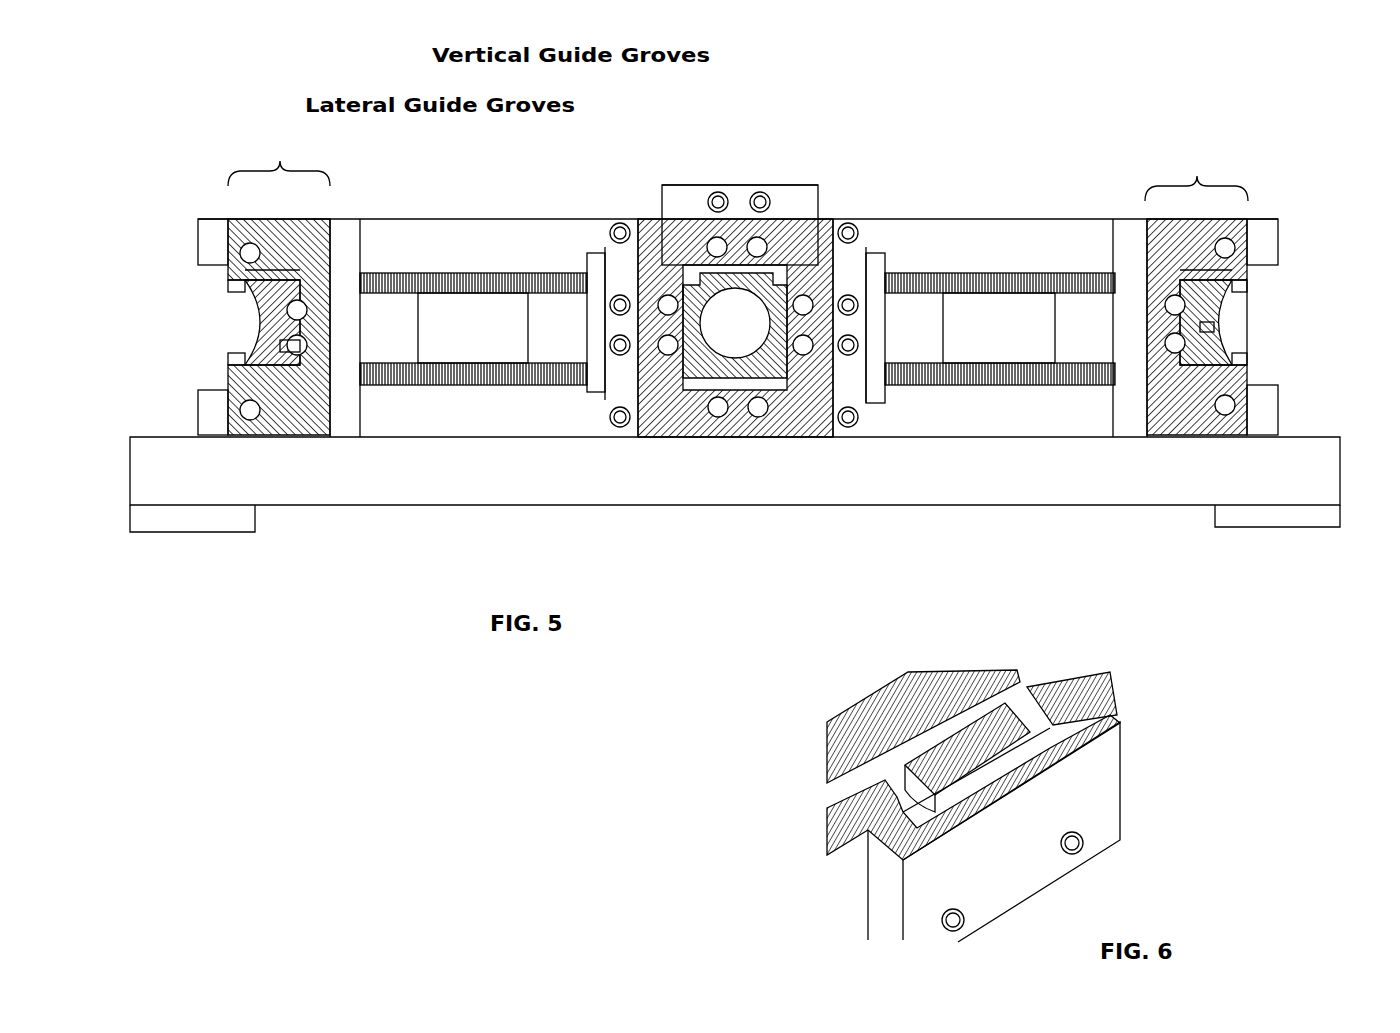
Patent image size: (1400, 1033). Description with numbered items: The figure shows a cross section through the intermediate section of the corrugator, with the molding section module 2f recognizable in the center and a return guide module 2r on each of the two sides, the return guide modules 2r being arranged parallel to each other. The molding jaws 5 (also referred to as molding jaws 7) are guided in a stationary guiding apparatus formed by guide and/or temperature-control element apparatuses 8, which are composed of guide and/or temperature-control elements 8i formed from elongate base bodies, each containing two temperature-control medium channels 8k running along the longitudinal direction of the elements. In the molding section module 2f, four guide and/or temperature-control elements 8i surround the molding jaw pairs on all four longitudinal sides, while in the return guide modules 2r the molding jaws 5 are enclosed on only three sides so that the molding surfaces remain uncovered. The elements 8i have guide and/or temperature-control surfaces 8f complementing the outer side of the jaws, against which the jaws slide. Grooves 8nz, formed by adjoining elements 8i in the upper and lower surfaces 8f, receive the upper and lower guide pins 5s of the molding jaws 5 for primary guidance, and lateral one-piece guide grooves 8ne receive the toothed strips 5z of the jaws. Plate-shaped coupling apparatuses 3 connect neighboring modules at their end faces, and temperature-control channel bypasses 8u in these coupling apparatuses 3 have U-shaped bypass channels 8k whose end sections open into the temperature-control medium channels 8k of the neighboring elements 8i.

In FIG. 5, the return guide module 2r is at (738, 169).
In FIG. 5, the molding section module 2f is at (743, 170).
In FIG. 6, the coupling apparatus 3 is at (1124, 815).
In FIG. 5, the molding jaw 5 is at (273, 320).
In FIG. 5, the guide pin 5s is at (242, 258).
In FIG. 5, the toothed strip 5z is at (257, 293).
In FIG. 5, the molding jaw 7 is at (235, 437).
In FIG. 5, the guide and/or temperature-control element apparatus 8 is at (277, 212).
In FIG. 5, the temperature-control medium channel 8k is at (258, 406).
In FIG. 6, the temperature-control medium channel 8k is at (1020, 685).
In FIG. 5, the guide and/or temperature-control element 8i is at (290, 440).
In FIG. 5, the lateral guide groove 8ne is at (240, 278).
In FIG. 5, the guide groove 8nz is at (262, 394).
In FIG. 5, the guide and/or temperature-control surface 8f is at (278, 348).
In FIG. 5, the temperature-control channel bypass 8u is at (805, 212).
In FIG. 6, the temperature-control channel bypass 8u is at (1107, 757).